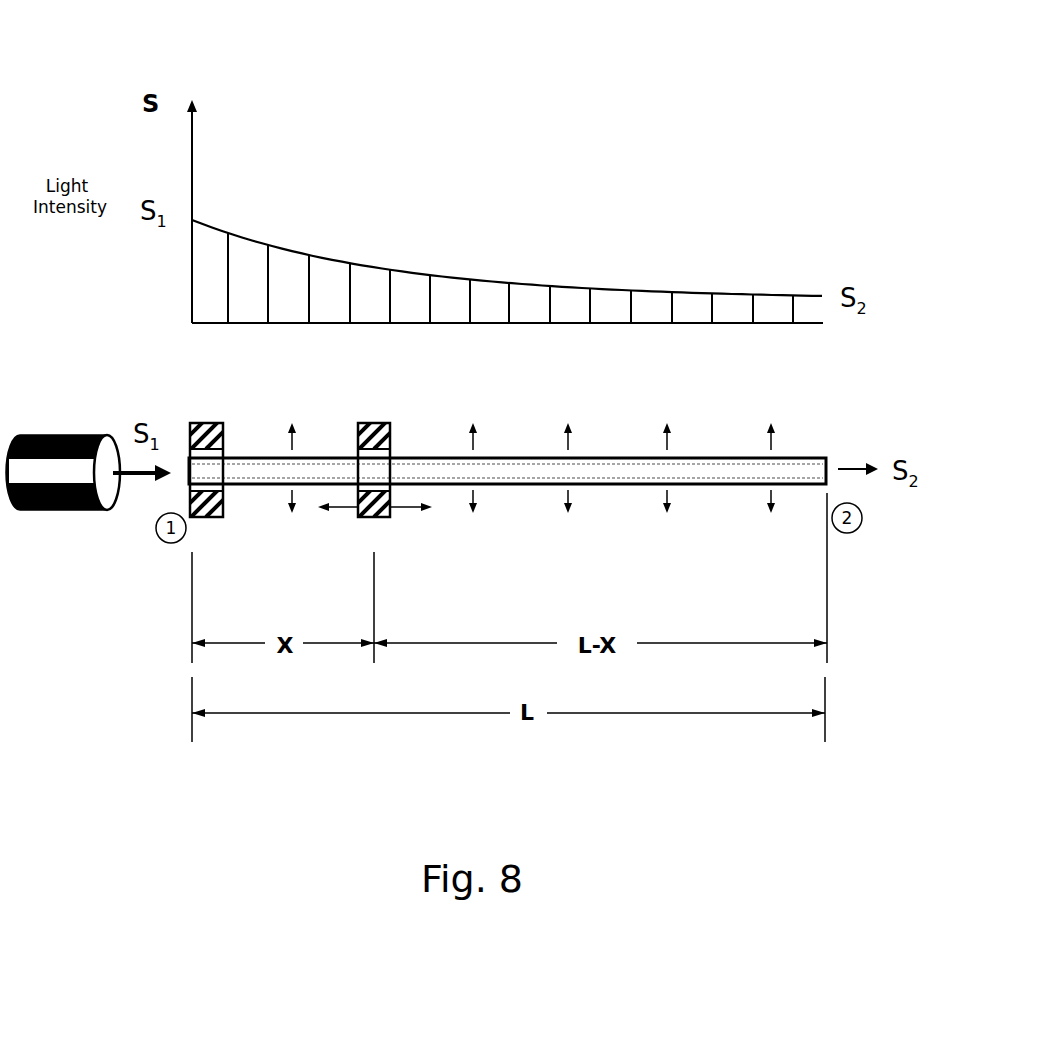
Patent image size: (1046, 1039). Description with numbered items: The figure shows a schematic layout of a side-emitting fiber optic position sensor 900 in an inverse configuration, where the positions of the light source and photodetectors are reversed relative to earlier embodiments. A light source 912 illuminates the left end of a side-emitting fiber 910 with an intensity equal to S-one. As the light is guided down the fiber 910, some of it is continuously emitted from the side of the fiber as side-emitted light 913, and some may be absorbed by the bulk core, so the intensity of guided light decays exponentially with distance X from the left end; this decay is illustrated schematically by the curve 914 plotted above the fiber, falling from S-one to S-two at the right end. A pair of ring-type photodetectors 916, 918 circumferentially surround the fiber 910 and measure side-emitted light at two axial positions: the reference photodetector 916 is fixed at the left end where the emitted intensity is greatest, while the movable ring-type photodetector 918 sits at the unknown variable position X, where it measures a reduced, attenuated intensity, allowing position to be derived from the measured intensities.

The side-emitting fiber optic position sensor 900 is at (834, 66).
The side-emitting fiber 910 is at (605, 487).
The light source 912 is at (57, 423).
The light emitted from rod surface 913 is at (540, 451).
The curve 914 is at (602, 282).
The reference photodetector 916 is at (210, 415).
The movable ring-type photodetector 918 is at (377, 413).